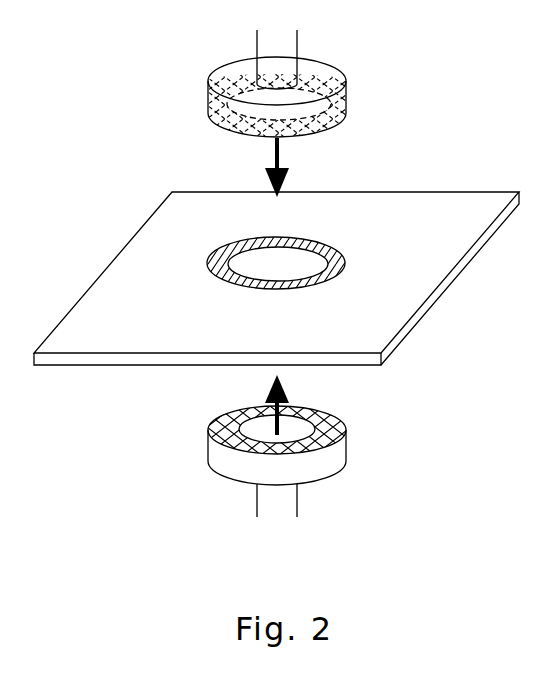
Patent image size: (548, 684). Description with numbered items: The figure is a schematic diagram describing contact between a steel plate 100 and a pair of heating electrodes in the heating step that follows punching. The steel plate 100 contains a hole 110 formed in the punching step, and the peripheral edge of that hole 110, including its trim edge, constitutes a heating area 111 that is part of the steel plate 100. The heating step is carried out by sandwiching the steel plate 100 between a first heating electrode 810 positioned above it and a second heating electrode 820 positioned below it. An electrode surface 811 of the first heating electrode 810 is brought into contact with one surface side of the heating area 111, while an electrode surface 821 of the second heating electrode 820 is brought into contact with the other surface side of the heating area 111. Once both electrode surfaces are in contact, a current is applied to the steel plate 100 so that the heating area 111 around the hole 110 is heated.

The steel plate 100 is at (479, 202).
The hole 110 is at (265, 219).
The heating area 111 is at (217, 268).
The first heating electrode 810 is at (322, 75).
The electrode surface 811 is at (320, 130).
The second heating electrode 820 is at (323, 473).
The electrode surface 821 is at (333, 420).